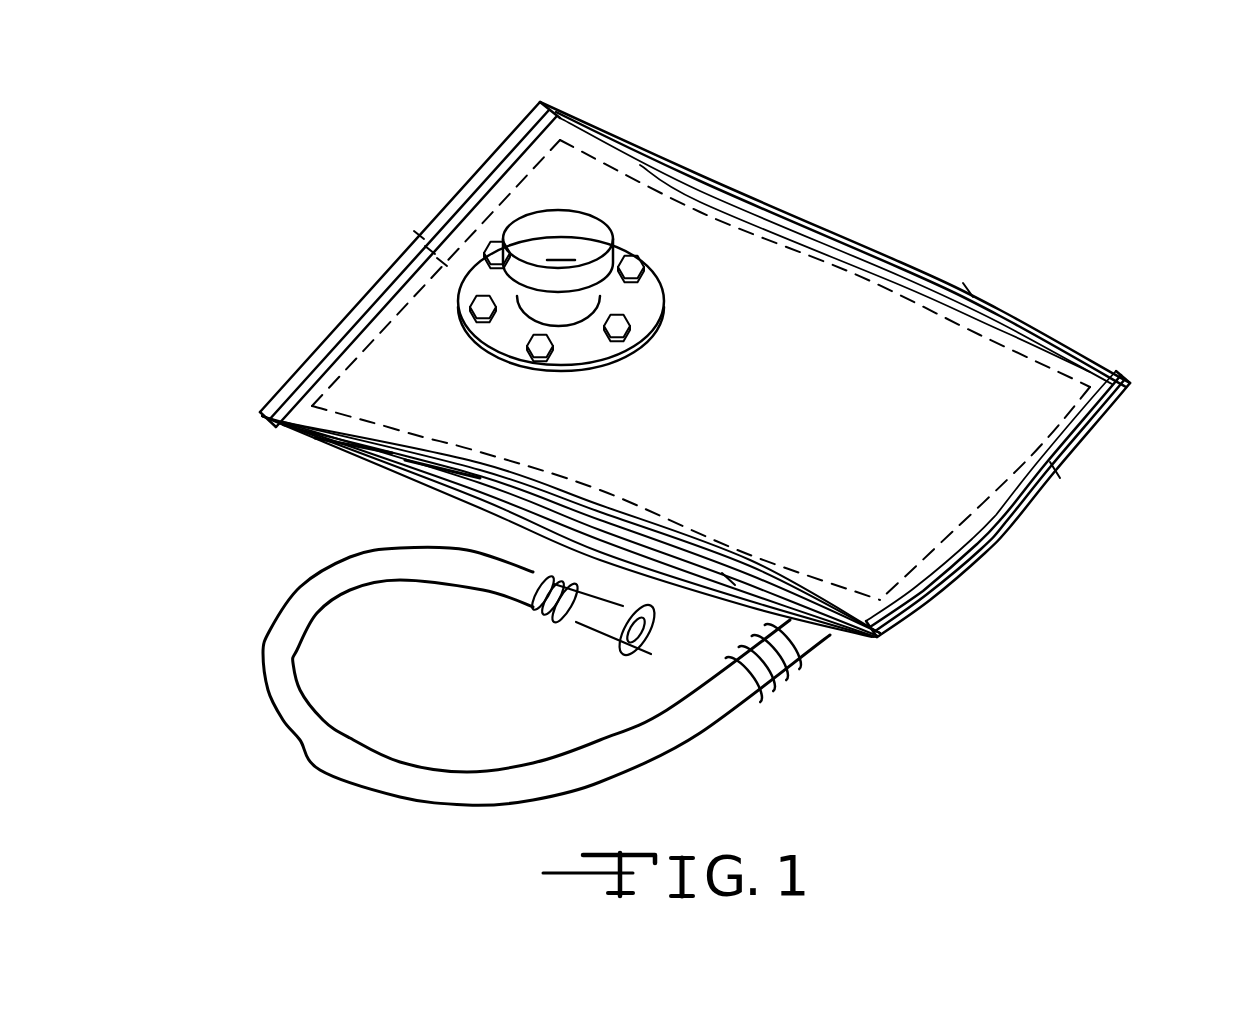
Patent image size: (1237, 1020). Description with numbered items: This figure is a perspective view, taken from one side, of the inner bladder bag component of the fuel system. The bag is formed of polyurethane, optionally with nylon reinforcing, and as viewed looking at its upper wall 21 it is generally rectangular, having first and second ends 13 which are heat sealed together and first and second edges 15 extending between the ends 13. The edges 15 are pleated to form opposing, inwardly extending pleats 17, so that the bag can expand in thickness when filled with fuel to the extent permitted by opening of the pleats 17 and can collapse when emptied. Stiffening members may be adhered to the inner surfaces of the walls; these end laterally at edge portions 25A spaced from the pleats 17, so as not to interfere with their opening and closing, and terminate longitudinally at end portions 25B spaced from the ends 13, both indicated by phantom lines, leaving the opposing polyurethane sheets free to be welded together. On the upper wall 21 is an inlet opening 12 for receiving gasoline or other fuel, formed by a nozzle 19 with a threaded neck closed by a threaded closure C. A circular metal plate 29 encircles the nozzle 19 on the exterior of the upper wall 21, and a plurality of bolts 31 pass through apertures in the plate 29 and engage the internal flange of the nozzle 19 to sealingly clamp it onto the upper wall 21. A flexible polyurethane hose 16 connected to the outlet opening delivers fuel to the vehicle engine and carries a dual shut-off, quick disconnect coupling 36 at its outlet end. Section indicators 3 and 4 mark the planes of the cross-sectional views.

The inlet opening 12 is at (517, 300).
The first and second ends 13 is at (485, 168).
The first and second edges 15 is at (727, 183).
The hose 16 is at (297, 722).
The pleats 17 is at (493, 497).
The nozzle 19 is at (573, 315).
The upper wall 21 is at (855, 447).
The edge portions 25A is at (970, 288).
The end portions 25B is at (416, 240).
The circular metal plate 29 is at (633, 301).
The bolts 31 is at (629, 262).
The dual shut-off, quick disconnect coupling 36 is at (587, 618).
The section line 3 is at (900, 227).
The section line 4 is at (655, 270).